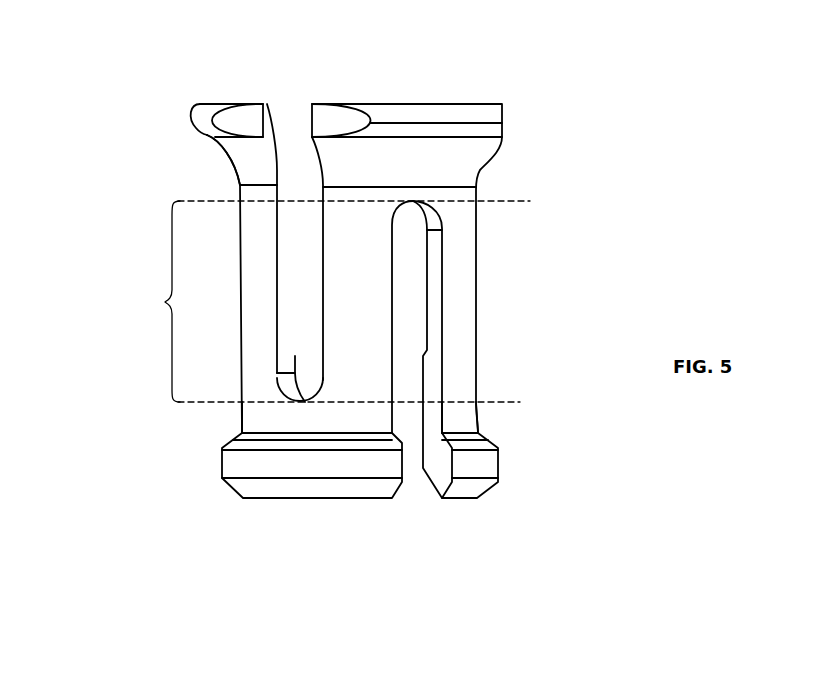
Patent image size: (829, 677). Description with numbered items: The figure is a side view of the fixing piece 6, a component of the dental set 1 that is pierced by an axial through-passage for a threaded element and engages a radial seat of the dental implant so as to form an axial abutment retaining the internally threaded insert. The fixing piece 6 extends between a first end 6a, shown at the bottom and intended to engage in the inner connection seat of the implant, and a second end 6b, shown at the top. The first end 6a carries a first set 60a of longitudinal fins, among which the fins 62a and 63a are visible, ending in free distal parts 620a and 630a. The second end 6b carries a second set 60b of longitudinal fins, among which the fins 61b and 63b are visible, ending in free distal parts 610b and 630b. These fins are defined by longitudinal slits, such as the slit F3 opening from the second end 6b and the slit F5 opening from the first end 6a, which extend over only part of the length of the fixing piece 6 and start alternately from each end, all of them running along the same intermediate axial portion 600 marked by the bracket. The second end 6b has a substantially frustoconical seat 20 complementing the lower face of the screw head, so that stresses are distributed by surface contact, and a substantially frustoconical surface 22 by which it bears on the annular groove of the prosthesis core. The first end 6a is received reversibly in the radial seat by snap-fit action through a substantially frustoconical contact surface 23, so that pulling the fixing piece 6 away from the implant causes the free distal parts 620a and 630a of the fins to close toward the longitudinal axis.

The set 1 is at (582, 212).
The fixing piece 6 is at (552, 277).
The first end 6a is at (510, 470).
The second end 6b is at (510, 120).
The frustoconical seat 20 is at (303, 180).
The frustoconical surface 22 is at (205, 135).
The frustoconical contact surface 23 is at (488, 437).
The first set of longitudinal fins 60a is at (199, 462).
The second set of longitudinal fins 60b is at (177, 128).
The longitudinal fin 61b is at (255, 180).
The longitudinal fin 62a is at (472, 420).
The longitudinal fin 63a is at (283, 413).
The longitudinal fin 63b is at (420, 170).
The intermediate axial portion 600 is at (321, 301).
The free distal part 610b is at (193, 113).
The free distal part 620a is at (473, 468).
The free distal part 630a is at (292, 462).
The free distal part 630b is at (453, 113).
The longitudinal slit F3 is at (295, 356).
The longitudinal slit F5 is at (410, 417).